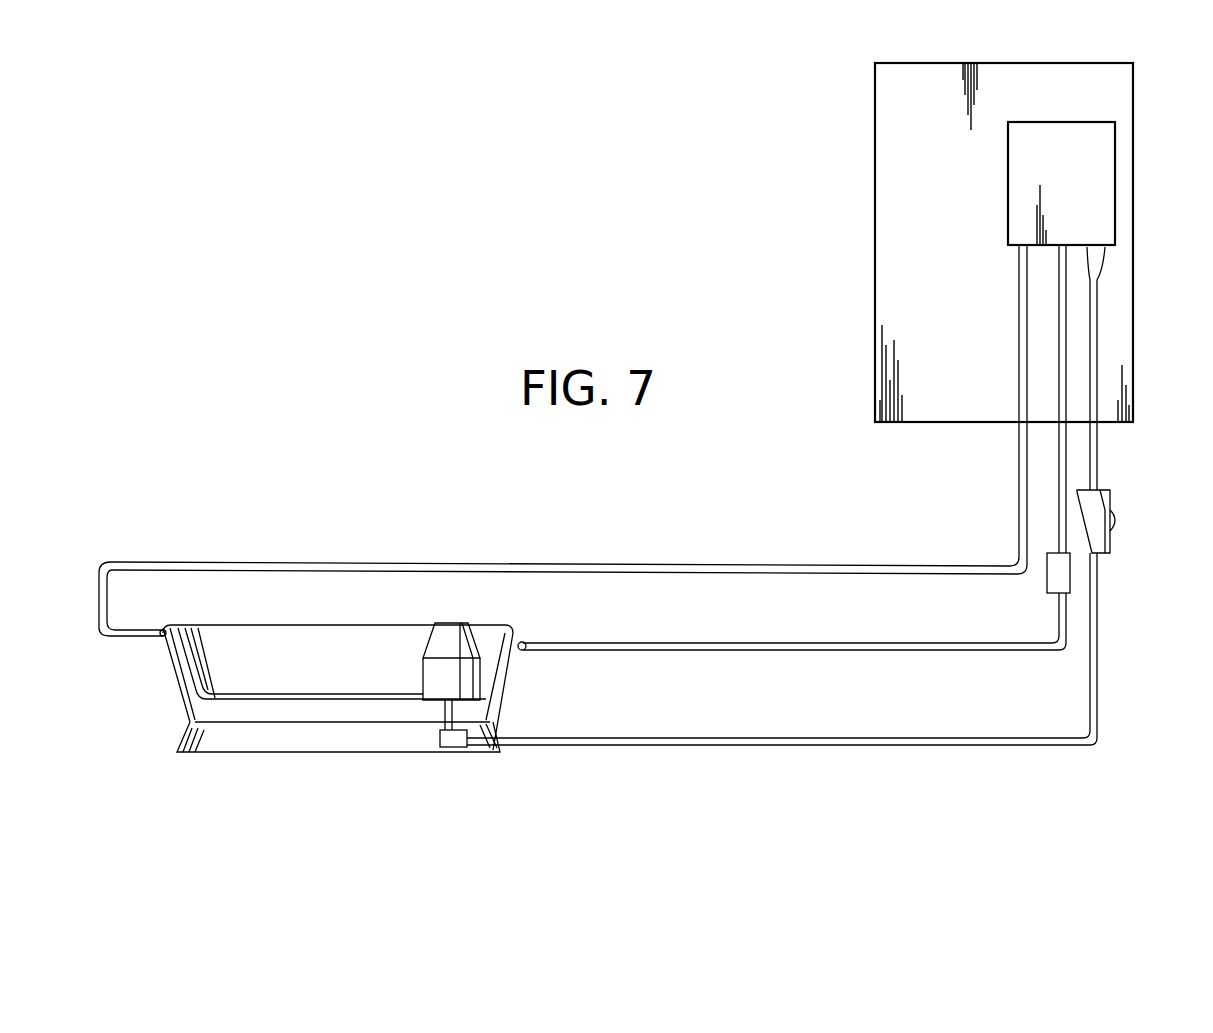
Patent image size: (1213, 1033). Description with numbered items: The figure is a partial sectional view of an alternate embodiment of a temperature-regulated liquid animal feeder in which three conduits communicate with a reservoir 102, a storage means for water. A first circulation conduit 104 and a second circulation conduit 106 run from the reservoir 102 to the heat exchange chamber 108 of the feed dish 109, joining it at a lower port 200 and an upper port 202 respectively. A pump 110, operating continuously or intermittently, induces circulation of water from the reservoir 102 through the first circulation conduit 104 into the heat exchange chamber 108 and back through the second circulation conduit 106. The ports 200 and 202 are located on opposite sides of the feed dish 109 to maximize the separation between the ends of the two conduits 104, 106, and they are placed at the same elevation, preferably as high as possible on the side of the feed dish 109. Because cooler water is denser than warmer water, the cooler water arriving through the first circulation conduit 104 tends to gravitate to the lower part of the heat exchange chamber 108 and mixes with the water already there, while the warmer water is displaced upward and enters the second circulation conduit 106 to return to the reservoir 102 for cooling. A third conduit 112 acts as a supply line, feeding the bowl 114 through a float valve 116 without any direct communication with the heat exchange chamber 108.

The reservoir 102 is at (1107, 185).
The first circulation conduit 104 is at (806, 646).
The second circulation conduit 106 is at (918, 540).
The heat exchange chamber 108 is at (360, 712).
The feed dish 109 is at (178, 705).
The pump 110 is at (1050, 578).
The third conduit 112 is at (1100, 450).
The bowl 114 is at (345, 605).
The float valve 116 is at (447, 628).
The lower port 200 is at (525, 638).
The upper port 202 is at (160, 643).